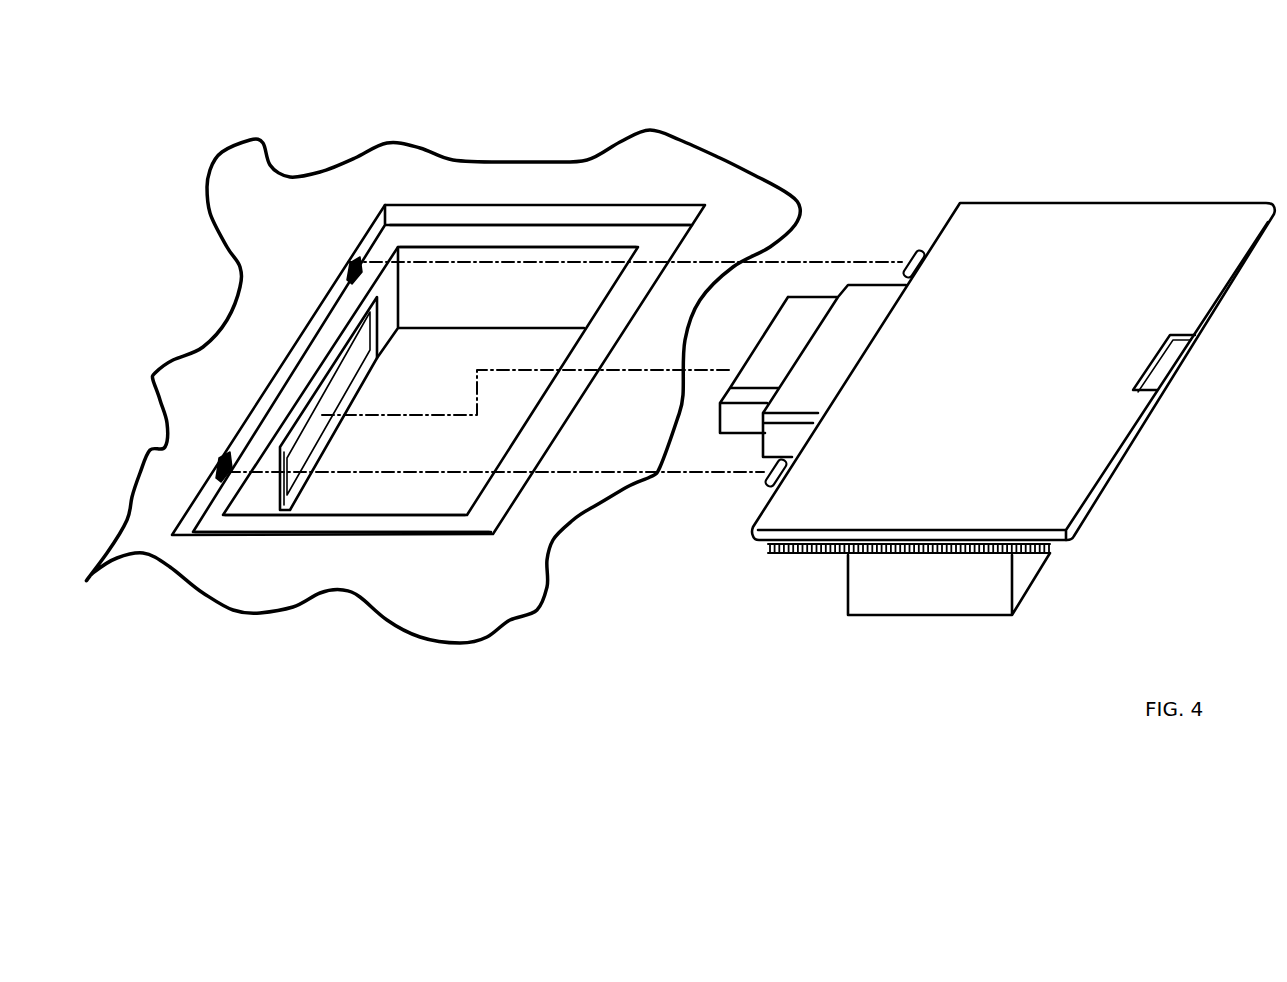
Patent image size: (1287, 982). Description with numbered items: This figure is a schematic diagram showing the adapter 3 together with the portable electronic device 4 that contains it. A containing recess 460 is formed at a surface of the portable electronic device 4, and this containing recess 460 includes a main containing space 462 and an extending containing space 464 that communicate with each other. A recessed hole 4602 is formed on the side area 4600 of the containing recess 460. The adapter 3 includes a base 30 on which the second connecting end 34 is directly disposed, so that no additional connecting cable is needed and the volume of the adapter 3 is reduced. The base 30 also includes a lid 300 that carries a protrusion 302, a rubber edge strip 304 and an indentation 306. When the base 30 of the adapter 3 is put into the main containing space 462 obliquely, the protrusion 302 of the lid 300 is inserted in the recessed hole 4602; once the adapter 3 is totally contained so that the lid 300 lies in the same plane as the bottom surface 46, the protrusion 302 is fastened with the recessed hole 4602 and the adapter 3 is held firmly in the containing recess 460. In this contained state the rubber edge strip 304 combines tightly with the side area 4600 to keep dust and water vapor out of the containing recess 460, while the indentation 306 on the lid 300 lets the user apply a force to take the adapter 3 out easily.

The portable electronic device 4 is at (203, 80).
The bottom surface 46 is at (342, 197).
The containing recess 460 is at (480, 205).
The side area 4600 is at (622, 233).
The recessed hole 4602 is at (223, 468).
The extending containing space 464 is at (330, 395).
The main containing space 462 is at (413, 497).
The adapter 3 is at (1033, 146).
The lid 300 is at (1183, 217).
The protrusion 302 is at (906, 252).
The rubber edge strip 304 is at (790, 557).
The indentation 306 is at (1168, 368).
The base 30 is at (960, 597).
The second connecting end 34 is at (720, 433).